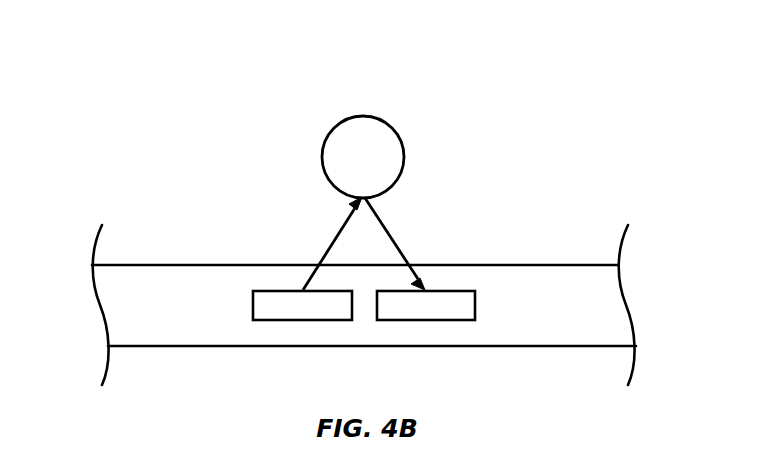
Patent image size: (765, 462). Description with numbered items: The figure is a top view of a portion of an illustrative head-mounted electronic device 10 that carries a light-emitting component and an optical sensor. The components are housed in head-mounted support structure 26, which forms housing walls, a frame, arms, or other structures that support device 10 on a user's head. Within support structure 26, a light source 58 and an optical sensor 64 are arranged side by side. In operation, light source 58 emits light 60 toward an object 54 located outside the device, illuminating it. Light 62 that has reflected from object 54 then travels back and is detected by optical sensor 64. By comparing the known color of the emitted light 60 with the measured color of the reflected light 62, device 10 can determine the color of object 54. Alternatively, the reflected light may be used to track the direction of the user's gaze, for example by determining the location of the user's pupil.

The electronic device 10 is at (534, 86).
The head-mounted support structure 26 is at (620, 288).
The object 54 is at (362, 125).
The light source 58 is at (302, 313).
The light 60 is at (330, 243).
The light 62 is at (397, 243).
The optical sensor 64 is at (427, 313).